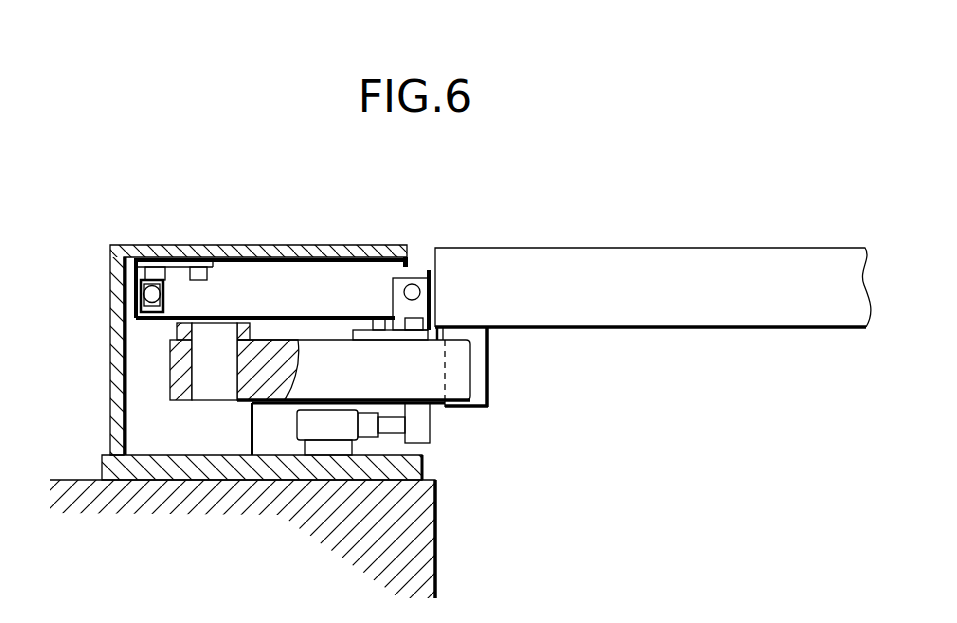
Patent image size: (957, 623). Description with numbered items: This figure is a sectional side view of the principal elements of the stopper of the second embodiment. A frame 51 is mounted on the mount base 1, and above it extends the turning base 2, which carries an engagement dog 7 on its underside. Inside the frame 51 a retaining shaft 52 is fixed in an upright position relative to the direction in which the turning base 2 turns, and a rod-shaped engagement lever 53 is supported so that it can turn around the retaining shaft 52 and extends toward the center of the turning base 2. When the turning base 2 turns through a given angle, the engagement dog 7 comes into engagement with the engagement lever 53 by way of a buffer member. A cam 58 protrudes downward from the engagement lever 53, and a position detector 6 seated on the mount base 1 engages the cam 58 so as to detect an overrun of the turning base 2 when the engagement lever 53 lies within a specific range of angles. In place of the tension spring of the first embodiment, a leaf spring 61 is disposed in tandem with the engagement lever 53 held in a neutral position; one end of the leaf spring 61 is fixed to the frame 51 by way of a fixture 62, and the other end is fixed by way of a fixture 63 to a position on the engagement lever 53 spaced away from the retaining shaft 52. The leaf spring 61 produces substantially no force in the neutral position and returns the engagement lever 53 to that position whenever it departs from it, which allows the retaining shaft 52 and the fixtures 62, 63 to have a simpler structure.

The mount base 1 is at (423, 557).
The turning base 2 is at (641, 268).
The position detector 6 is at (340, 427).
The engagement dog 7 is at (478, 370).
The frame 51 is at (110, 290).
The retaining shaft 52 is at (215, 372).
The engagement lever 53 is at (318, 352).
The cam 58 is at (425, 417).
The leaf spring 61 is at (340, 295).
The fixture 62 is at (134, 261).
The fixture 63 is at (413, 290).